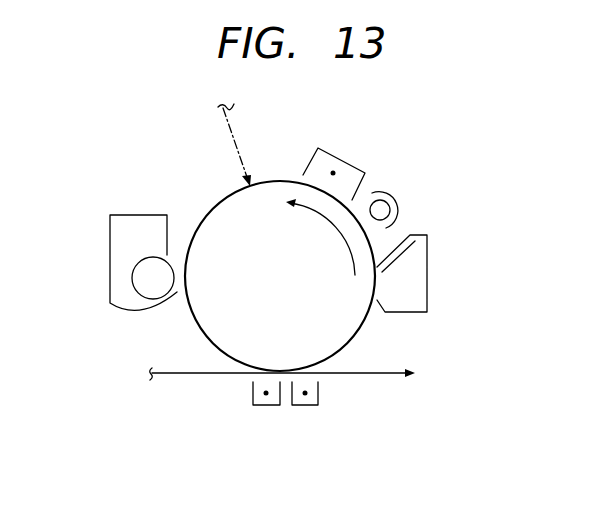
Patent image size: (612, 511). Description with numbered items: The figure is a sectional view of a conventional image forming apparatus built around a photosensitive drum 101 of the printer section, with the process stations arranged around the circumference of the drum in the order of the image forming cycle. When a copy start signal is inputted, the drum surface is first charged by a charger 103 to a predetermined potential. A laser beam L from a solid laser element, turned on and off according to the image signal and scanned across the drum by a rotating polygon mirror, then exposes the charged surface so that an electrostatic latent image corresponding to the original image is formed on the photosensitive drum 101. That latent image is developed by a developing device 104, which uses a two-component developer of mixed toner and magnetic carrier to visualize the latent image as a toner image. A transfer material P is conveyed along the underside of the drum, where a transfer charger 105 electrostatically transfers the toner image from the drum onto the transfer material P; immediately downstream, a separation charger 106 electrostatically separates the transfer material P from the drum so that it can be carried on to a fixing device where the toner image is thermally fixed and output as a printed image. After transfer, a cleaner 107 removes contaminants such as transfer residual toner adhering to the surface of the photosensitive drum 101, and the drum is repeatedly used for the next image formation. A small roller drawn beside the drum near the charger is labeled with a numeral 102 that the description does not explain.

The photosensitive drum 101 is at (279, 181).
The charging roller 102 is at (398, 200).
The charger 103 is at (347, 158).
The developing device 104 is at (110, 240).
The transfer charger 105 is at (262, 407).
The separation charger 106 is at (310, 409).
The cleaner 107 is at (420, 283).
The laser beam L is at (233, 128).
The transfer material P is at (192, 377).